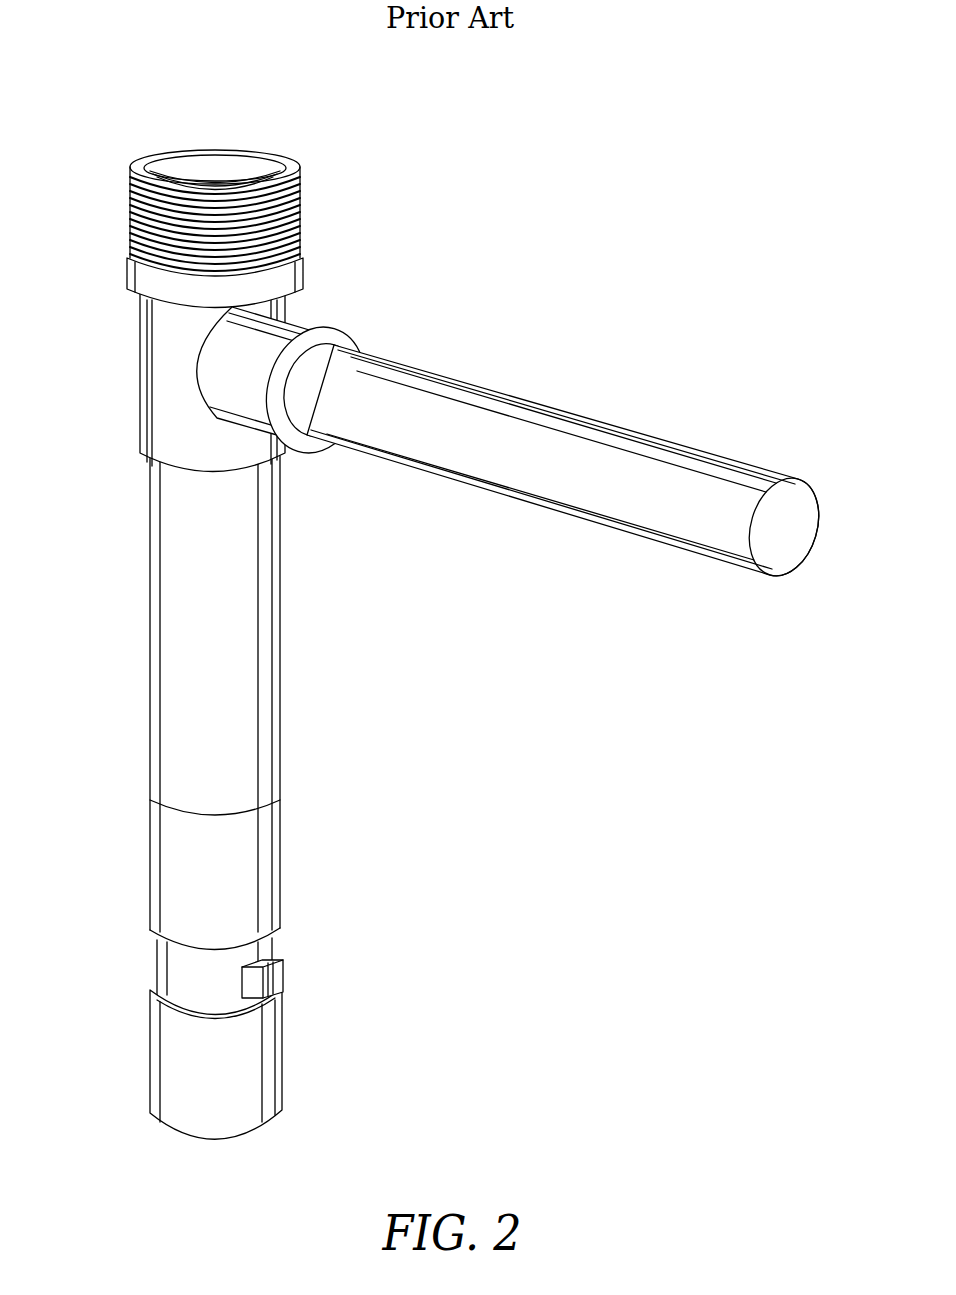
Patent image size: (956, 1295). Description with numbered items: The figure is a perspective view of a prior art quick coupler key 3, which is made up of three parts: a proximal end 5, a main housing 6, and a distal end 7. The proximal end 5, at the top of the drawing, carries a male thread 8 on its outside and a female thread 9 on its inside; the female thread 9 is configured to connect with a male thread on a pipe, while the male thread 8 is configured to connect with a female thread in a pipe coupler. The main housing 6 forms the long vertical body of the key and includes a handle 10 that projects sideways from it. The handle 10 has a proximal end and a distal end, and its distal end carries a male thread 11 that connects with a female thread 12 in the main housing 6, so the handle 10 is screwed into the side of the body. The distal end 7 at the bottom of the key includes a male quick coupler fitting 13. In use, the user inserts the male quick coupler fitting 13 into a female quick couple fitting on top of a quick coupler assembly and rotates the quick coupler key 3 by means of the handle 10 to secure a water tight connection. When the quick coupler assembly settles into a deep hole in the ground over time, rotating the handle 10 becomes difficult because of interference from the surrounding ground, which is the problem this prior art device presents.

The quick coupler key 3 is at (106, 124).
The proximal end 5 is at (97, 222).
The main housing 6 is at (122, 676).
The distal end 7 is at (122, 1054).
The male thread 8 is at (302, 206).
The female thread 9 is at (225, 168).
The handle 10 is at (600, 420).
The male thread 11 is at (357, 343).
The female thread 12 is at (314, 318).
The male quick coupler fitting 13 is at (284, 978).